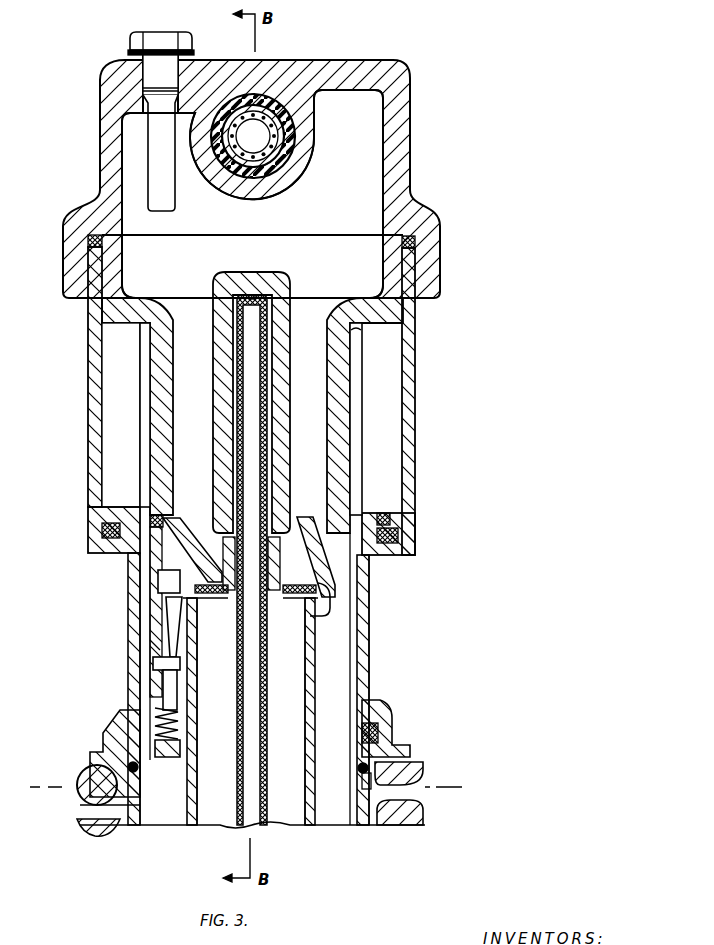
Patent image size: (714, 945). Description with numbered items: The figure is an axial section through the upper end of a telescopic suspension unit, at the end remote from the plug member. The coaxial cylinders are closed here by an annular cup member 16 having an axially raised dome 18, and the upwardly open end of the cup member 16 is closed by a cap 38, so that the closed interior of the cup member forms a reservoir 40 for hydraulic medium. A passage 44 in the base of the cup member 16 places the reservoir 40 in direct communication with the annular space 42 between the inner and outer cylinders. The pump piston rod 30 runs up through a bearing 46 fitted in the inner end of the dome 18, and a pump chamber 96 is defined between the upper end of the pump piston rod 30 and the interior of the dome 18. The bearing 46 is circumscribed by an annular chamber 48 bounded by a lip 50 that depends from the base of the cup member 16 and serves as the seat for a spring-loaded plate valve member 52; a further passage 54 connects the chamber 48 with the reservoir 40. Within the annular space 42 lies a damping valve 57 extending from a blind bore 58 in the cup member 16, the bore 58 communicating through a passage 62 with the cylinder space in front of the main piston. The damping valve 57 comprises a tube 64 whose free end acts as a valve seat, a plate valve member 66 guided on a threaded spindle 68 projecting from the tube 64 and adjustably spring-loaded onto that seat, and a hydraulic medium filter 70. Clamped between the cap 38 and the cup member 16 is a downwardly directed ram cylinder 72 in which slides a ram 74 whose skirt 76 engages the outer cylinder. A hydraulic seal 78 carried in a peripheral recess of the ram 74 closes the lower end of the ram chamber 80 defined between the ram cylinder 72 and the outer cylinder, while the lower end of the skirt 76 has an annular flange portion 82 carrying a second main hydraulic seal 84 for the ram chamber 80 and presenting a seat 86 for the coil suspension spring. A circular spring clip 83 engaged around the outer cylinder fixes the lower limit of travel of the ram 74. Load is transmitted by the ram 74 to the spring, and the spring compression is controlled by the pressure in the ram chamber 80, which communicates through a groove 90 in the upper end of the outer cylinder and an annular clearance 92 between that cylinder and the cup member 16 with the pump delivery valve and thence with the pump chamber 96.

The cap 38 is at (72, 258).
The reservoir 40 is at (340, 265).
The annular cup member 16 is at (340, 449).
The dome 18 is at (280, 426).
The pump chamber 96 is at (232, 408).
The ram cylinder 72 is at (96, 426).
The ram 74 is at (118, 512).
The hydraulic seal 78 is at (104, 531).
The ram chamber 80 is at (120, 403).
The groove 90 is at (356, 352).
The annular clearance 92 is at (356, 397).
The annular chamber 48 is at (212, 525).
The further passage 54 is at (208, 556).
The passage 44 is at (312, 550).
The bearing 46 is at (293, 681).
The further spring-loaded plate valve member 52 is at (209, 681).
The lip 50 is at (308, 620).
The pump piston rod 30 is at (265, 660).
The skirt 76 is at (368, 638).
The annular space 42 is at (345, 683).
The blind bore 58 is at (158, 580).
The passage 62 is at (168, 620).
The hydraulic medium filter 70 is at (150, 645).
The damping valve 57 is at (160, 664).
The tube 64 is at (160, 688).
The plate valve member 66 is at (150, 700).
The threaded spindle 68 is at (130, 727).
The seat 86 is at (88, 778).
The annular flange portion 82 is at (385, 706).
The second main hydraulic seal 84 is at (380, 731).
The circular spring clip 83 is at (358, 770).